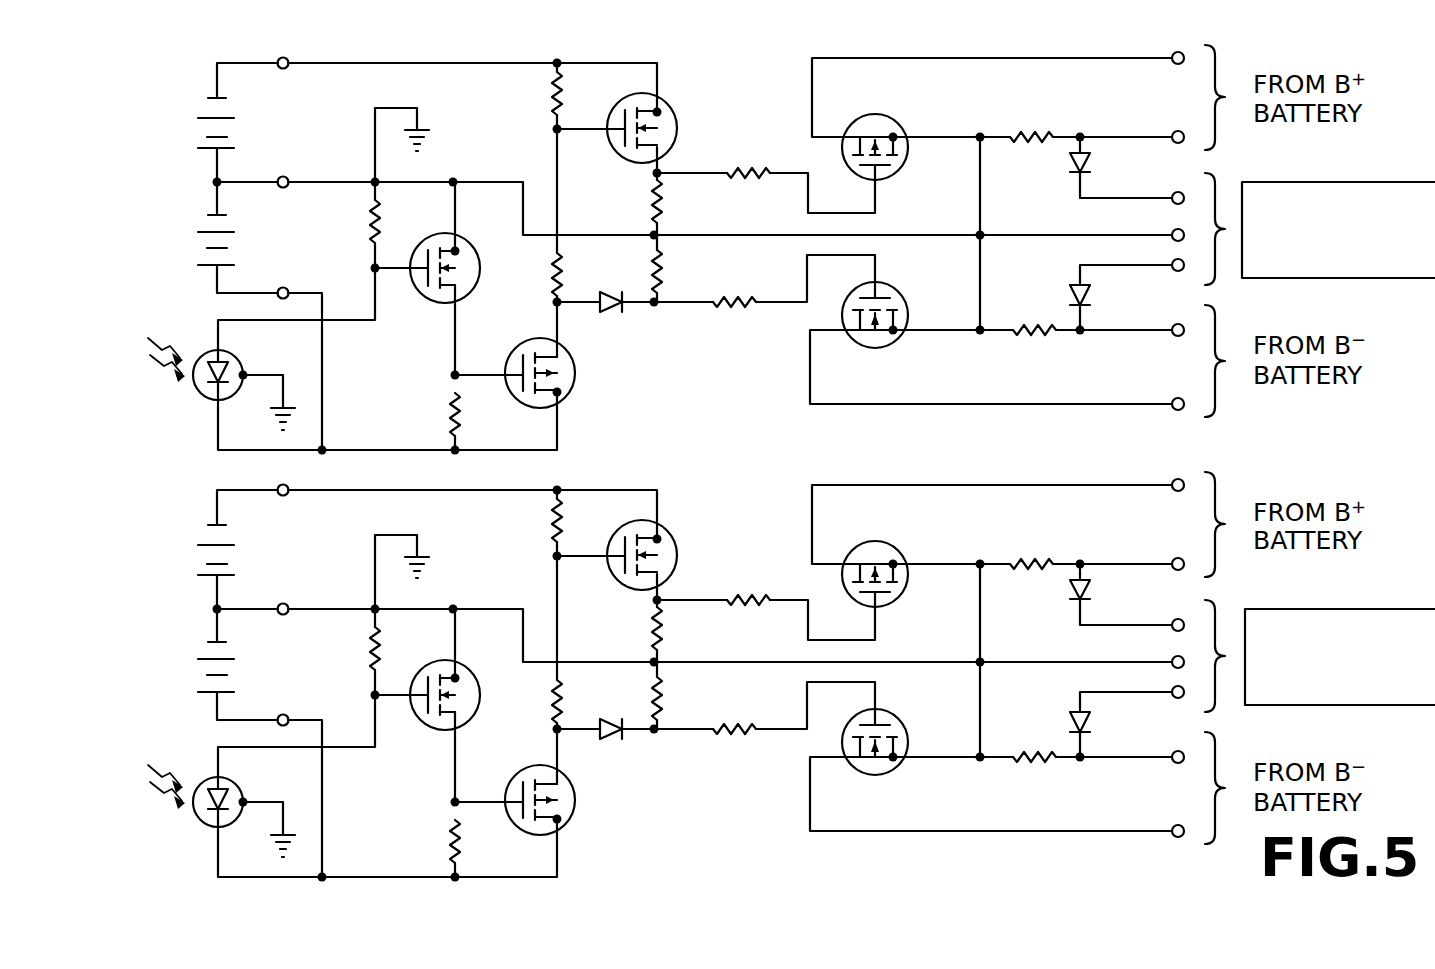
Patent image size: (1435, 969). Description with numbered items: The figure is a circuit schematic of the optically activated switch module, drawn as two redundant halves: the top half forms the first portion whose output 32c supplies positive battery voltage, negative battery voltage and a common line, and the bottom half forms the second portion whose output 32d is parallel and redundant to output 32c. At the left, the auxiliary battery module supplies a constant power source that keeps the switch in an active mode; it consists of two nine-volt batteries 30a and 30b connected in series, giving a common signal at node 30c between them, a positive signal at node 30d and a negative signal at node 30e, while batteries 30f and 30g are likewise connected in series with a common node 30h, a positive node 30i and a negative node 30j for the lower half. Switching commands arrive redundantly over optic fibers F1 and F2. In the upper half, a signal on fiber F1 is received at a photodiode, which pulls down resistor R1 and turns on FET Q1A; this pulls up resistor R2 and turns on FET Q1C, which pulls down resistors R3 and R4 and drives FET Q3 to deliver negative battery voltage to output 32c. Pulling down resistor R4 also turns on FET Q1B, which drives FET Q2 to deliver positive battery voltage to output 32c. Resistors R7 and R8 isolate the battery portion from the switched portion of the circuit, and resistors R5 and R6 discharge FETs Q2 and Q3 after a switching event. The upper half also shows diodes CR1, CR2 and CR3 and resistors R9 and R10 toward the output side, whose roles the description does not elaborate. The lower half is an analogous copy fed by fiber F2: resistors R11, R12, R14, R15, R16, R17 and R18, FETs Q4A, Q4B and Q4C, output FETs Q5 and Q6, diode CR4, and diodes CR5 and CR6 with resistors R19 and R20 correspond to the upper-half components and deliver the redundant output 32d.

The battery 30a is at (232, 235).
The battery 30b is at (232, 118).
The node 30c is at (289, 177).
The node 30d is at (289, 288).
The node 30e is at (288, 68).
The battery 30f is at (232, 660).
The battery 30g is at (232, 545).
The node 30h is at (289, 604).
The node 30i is at (289, 715).
The node 30j is at (288, 495).
The output 32c is at (1372, 182).
The output 32d is at (1375, 609).
The optic fiber F1 is at (195, 358).
The optic fiber F2 is at (195, 787).
The resistor R1 is at (394, 221).
The resistor R2 is at (473, 414).
The resistor R3 is at (576, 274).
The resistor R4 is at (537, 95).
The resistor R5 is at (676, 201).
The resistor R6 is at (675, 271).
The resistor R7 is at (746, 158).
The resistor R8 is at (734, 287).
The resistor R9 is at (1031, 121).
The resistor R10 is at (1033, 316).
The resistor R11 is at (401, 648).
The resistor R12 is at (482, 841).
The resistor R14 is at (584, 520).
The resistor R15 is at (683, 628).
The resistor R16 is at (683, 698).
The resistor R17 is at (745, 584).
The resistor R18 is at (737, 751).
The resistor R19 is at (1033, 548).
The resistor R20 is at (1037, 779).
The diode CR1 is at (619, 318).
The diode CR2 is at (1108, 165).
The diode CR3 is at (1109, 297).
The diode CR4 is at (616, 748).
The diode CR5 is at (1108, 592).
The diode CR6 is at (1110, 722).
The FET Q1A is at (461, 278).
The FET Q1B is at (669, 128).
The FET Q1C is at (542, 373).
The FET Q2 is at (884, 136).
The FET Q3 is at (888, 309).
The MOSFET transistor Q4A is at (464, 706).
The MOSFET transistor Q4B is at (667, 551).
The MOSFET transistor Q4C is at (543, 800).
The MOSFET transistor Q5 is at (875, 561).
The MOSFET transistor Q6 is at (875, 760).